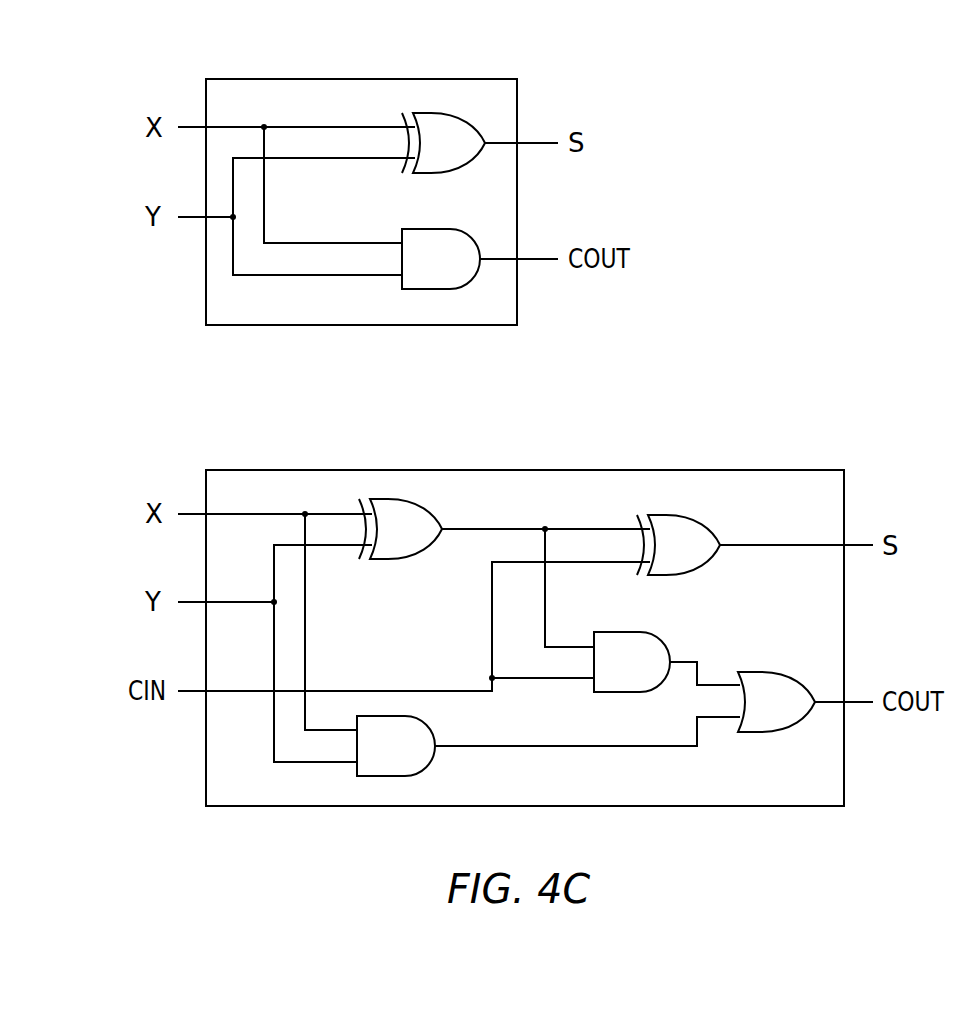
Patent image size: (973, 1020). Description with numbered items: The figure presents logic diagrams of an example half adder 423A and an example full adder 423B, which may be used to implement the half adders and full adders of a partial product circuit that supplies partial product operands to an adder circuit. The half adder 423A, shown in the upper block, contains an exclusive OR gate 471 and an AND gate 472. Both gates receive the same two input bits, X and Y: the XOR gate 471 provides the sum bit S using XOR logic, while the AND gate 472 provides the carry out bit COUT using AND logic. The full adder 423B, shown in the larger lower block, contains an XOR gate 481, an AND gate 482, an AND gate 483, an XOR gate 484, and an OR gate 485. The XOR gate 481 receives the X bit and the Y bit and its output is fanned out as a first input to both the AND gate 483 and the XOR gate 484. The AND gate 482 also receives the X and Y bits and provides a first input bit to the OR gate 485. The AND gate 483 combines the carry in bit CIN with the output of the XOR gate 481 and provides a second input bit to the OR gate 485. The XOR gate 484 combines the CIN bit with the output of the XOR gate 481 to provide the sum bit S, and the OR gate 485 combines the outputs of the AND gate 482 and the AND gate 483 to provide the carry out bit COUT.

The half adder 423A is at (293, 79).
The XOR gate 471 is at (435, 112).
The AND gate 472 is at (435, 290).
The full adder 423B is at (292, 470).
The XOR gate 481 is at (387, 499).
The AND gate 482 is at (377, 777).
The AND gate 483 is at (613, 692).
The XOR gate 484 is at (665, 515).
The OR gate 485 is at (758, 733).